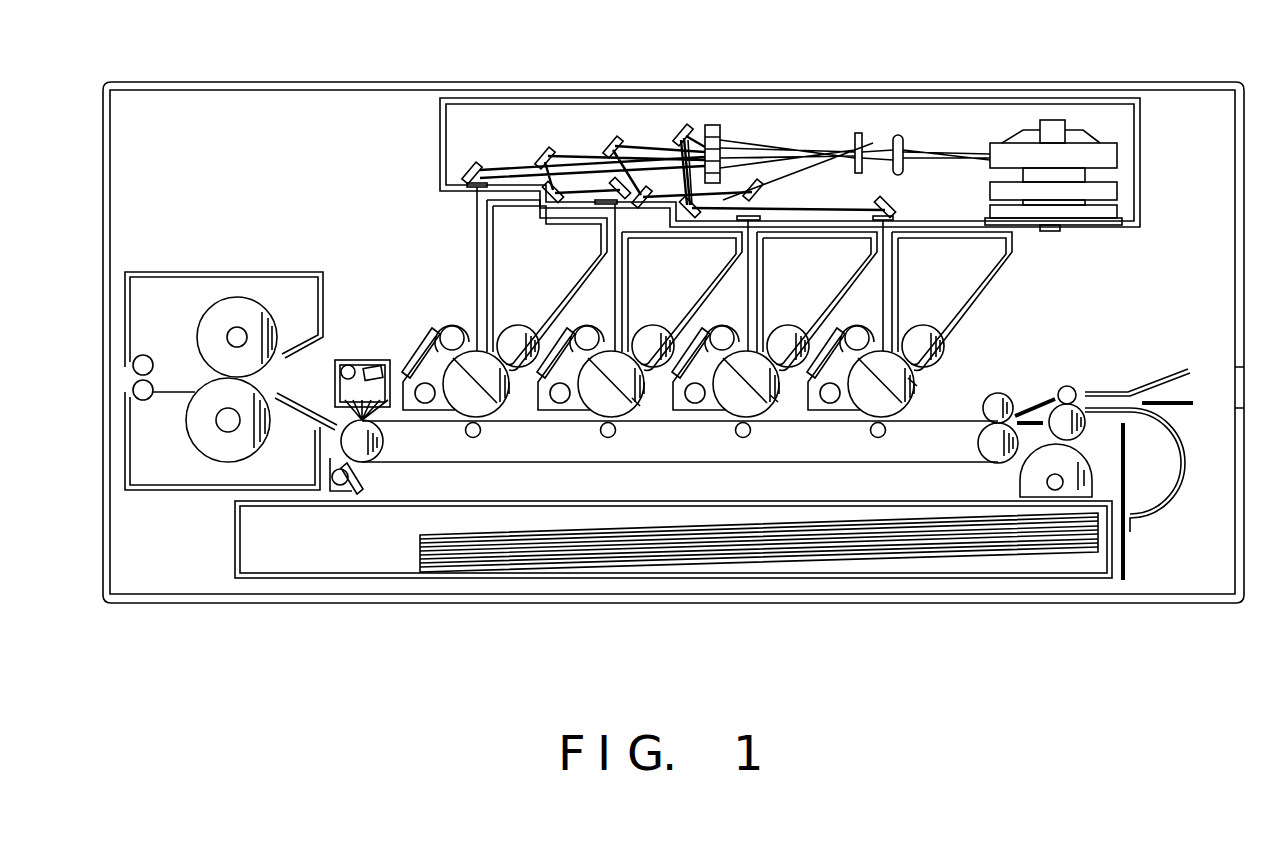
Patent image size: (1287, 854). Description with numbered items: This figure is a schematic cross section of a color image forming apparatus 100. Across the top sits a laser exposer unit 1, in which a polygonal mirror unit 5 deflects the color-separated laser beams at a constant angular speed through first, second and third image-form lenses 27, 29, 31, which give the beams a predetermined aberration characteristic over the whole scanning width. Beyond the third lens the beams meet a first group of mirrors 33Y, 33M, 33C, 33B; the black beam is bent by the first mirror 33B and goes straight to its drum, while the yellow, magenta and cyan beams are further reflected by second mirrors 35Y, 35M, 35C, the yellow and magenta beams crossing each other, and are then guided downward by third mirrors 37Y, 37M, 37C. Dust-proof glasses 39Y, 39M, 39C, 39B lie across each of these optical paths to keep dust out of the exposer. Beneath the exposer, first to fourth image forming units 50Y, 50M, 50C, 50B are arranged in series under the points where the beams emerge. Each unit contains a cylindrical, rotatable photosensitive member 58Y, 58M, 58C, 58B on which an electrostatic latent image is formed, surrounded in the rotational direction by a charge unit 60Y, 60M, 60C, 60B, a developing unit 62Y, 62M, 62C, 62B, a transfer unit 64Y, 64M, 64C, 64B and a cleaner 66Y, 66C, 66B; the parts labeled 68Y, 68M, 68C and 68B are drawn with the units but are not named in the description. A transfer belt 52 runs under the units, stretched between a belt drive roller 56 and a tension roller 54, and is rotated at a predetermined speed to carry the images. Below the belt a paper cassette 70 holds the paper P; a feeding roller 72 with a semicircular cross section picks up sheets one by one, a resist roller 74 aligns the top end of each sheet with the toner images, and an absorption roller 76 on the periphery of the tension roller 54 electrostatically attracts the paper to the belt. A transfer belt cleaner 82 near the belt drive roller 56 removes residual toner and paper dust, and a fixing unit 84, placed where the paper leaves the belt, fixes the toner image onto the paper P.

The laser exposer unit 1 is at (1130, 170).
The polygonal mirror unit 5 is at (1085, 138).
The first image-form lens 27 is at (905, 138).
The second image-form lens 29 is at (862, 136).
The third image-form lens 31 is at (722, 128).
The first mirror for black 33B is at (468, 168).
The first mirror for cyan 33C is at (545, 152).
The first mirror for magenta 33M is at (617, 140).
The first mirror for yellow 33Y is at (688, 130).
The second mirror for cyan 35C is at (510, 150).
The second mirror for magenta 35M is at (650, 190).
The second mirror for yellow 35Y is at (772, 158).
The third mirror for cyan 37C is at (600, 168).
The third mirror for magenta 37M is at (762, 190).
The third mirror for yellow 37Y is at (895, 203).
The dust-proof glass for black 39B is at (472, 190).
The dust-proof glass for cyan 39C is at (600, 205).
The dust-proof glass for magenta 39M is at (765, 217).
The dust-proof glass for yellow 39Y is at (897, 217).
The fourth image forming unit 50B is at (575, 273).
The third image forming unit 50C is at (682, 301).
The second image forming unit 50M is at (817, 301).
The first image forming unit 50Y is at (952, 301).
The transfer belt 52 is at (932, 421).
The tension roller 54 is at (983, 446).
The belt drive roller 56 is at (386, 439).
The photosensitive member for black 58B is at (476, 384).
The photosensitive member for cyan 58C is at (611, 384).
The photosensitive member for magenta 58M is at (746, 384).
The photosensitive member for yellow 58Y is at (881, 384).
The charge unit for black 60B is at (452, 334).
The charge unit for cyan 60C is at (678, 423).
The charge unit for magenta 60M is at (810, 423).
The charge unit for yellow 60Y is at (945, 373).
The developing unit for black 62B is at (522, 342).
The developing unit for cyan 62C is at (651, 330).
The developing unit for magenta 62M is at (786, 330).
The developing unit for yellow 62Y is at (921, 330).
The transfer unit for black 64B is at (473, 438).
The transfer unit for cyan 64C is at (632, 461).
The transfer unit for magenta 64M is at (765, 461).
The transfer unit for yellow 64Y is at (919, 461).
The cleaner for black 66B is at (418, 375).
The cleaner for cyan 66C is at (567, 415).
The cleaner for yellow 66Y is at (853, 440).
The black cleaning blade 68B is at (430, 330).
The cyan cleaning blade 68C is at (575, 351).
The magenta cleaning blade 68M is at (711, 351).
The yellow cleaning blade 68Y is at (846, 351).
The paper cassette 70 is at (1080, 578).
The feeding roller 72 is at (1070, 462).
The resist roller 74 is at (1074, 388).
The absorption roller 76 is at (1006, 400).
The transfer belt cleaner 82 is at (362, 478).
The fixing unit 84 is at (208, 472).
The image forming apparatus 100 is at (1245, 300).
The paper P is at (931, 547).